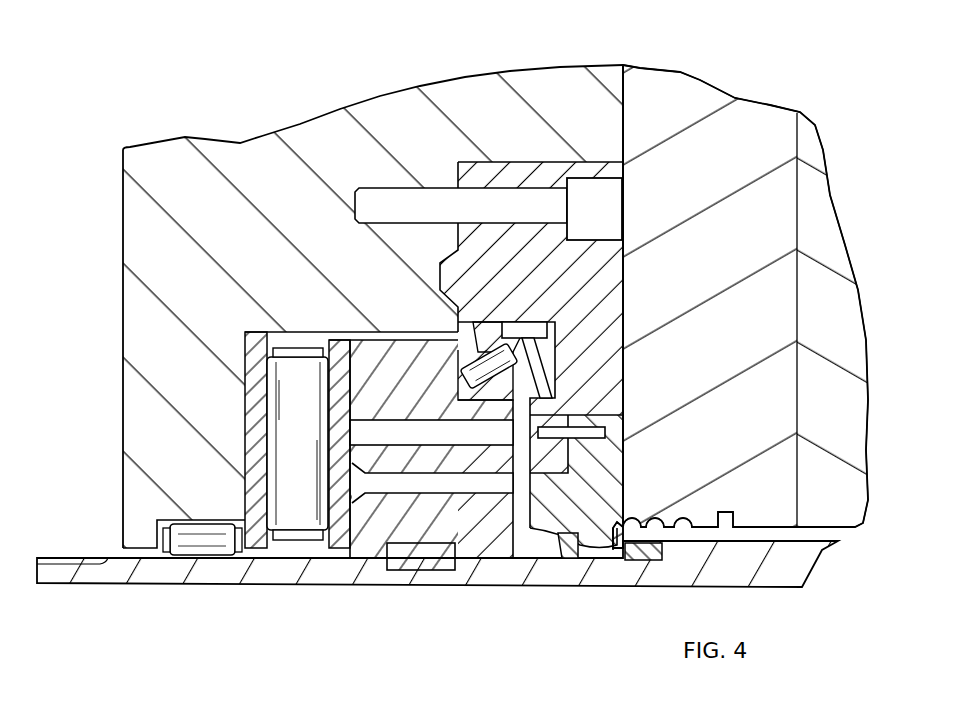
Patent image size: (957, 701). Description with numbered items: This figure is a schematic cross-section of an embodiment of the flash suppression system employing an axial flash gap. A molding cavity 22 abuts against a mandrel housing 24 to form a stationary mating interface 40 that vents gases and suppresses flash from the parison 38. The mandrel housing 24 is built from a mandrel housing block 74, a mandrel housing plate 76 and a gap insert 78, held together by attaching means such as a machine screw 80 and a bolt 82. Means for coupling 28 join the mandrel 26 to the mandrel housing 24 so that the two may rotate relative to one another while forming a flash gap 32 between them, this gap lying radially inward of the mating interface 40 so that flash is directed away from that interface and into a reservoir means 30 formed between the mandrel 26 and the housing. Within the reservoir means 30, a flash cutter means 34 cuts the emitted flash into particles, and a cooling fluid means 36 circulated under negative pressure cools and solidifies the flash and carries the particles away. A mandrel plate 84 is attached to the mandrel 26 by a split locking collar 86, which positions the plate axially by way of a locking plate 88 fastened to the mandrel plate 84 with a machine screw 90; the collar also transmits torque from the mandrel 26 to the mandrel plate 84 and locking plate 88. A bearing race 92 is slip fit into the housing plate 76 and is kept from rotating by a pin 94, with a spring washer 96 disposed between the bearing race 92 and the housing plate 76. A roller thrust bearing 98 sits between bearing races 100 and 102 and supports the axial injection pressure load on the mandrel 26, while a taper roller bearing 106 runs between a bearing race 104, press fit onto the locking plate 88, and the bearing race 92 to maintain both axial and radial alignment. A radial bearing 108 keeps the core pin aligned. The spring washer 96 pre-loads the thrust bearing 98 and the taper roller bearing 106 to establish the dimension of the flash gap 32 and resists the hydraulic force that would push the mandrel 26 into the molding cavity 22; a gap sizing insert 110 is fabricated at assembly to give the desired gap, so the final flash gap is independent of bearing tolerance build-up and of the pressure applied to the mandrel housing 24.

The molding cavity 22 is at (808, 110).
The mandrel housing 24 is at (463, 76).
The mandrel 26 is at (792, 570).
The means for coupling 28 is at (548, 343).
The reservoir means 30 is at (530, 560).
The flash gap 32 is at (620, 558).
The flash cutter means 34 is at (570, 560).
The cooling fluid means 36 is at (510, 562).
The parison 38 is at (828, 533).
The stationary mating interface 40 is at (618, 386).
The mandrel housing block 74 is at (245, 140).
The mandrel housing plate 76 is at (613, 287).
The gap insert 78 is at (620, 482).
The machine screw 80 is at (607, 432).
The bolt 82 is at (613, 210).
The mandrel plate 84 is at (390, 353).
The split locking collar 86 is at (397, 570).
The locking plate 88 is at (466, 533).
The machine screw 90 is at (415, 481).
The bearing race 92 is at (487, 334).
The pin 94 is at (517, 330).
The spring washer 96 is at (535, 370).
The roller thrust bearing 98 is at (270, 413).
The bearing race 100 is at (257, 338).
The bearing race 102 is at (340, 350).
The bearing race 104 is at (460, 382).
The taper roller bearing 106 is at (466, 364).
The radial bearing 108 is at (205, 547).
The gap sizing insert 110 is at (650, 562).